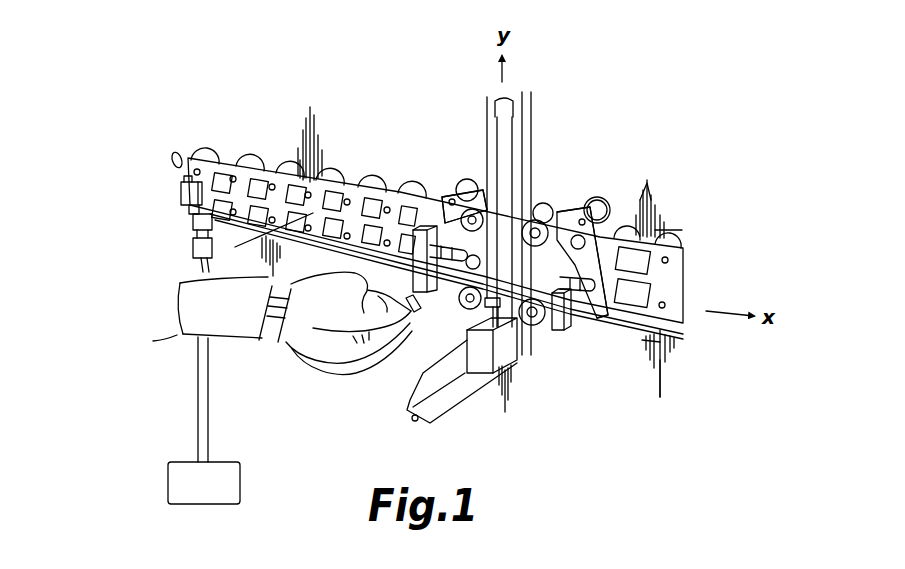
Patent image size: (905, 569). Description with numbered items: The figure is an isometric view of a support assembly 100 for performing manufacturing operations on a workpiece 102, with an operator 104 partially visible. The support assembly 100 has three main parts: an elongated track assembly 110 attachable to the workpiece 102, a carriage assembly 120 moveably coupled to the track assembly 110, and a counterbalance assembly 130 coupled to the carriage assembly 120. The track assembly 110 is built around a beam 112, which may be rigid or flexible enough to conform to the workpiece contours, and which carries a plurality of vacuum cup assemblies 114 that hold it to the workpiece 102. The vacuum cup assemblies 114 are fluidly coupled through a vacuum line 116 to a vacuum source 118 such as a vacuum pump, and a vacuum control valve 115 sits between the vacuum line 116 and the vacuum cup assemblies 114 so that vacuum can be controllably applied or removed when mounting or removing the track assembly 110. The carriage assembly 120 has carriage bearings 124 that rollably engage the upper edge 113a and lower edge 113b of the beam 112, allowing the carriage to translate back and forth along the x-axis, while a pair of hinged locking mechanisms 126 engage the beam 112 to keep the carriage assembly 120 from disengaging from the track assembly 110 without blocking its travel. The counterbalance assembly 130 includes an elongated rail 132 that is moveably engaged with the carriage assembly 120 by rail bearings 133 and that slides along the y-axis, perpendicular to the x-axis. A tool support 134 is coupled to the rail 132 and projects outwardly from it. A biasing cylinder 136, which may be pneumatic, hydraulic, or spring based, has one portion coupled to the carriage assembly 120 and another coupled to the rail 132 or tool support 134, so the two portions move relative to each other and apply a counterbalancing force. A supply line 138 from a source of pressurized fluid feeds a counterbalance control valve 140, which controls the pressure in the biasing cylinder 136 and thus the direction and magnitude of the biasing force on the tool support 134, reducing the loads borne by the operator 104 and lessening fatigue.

The support assembly 100 is at (709, 44).
The workpiece 102 is at (627, 393).
The operator 104 is at (225, 317).
The track assembly 110 is at (686, 262).
The beam 112 is at (193, 243).
The upper edge 113a is at (657, 224).
The lower edge 113b is at (663, 350).
The vacuum cup assemblies 114 is at (241, 158).
The vacuum control valve 115 is at (181, 187).
The vacuum line 116 is at (197, 424).
The vacuum source 118 is at (177, 487).
The carriage assembly 120 is at (544, 167).
The carriage bearings 124 is at (463, 190).
The locking mechanisms 126 is at (338, 262).
The counterbalance assembly 130 is at (529, 64).
The rail 132 is at (523, 99).
The rail bearings 133 is at (446, 212).
The tool support 134 is at (466, 400).
The biasing cylinder 136 is at (508, 137).
The supply line 138 is at (332, 371).
The counterbalance control valve 140 is at (414, 228).